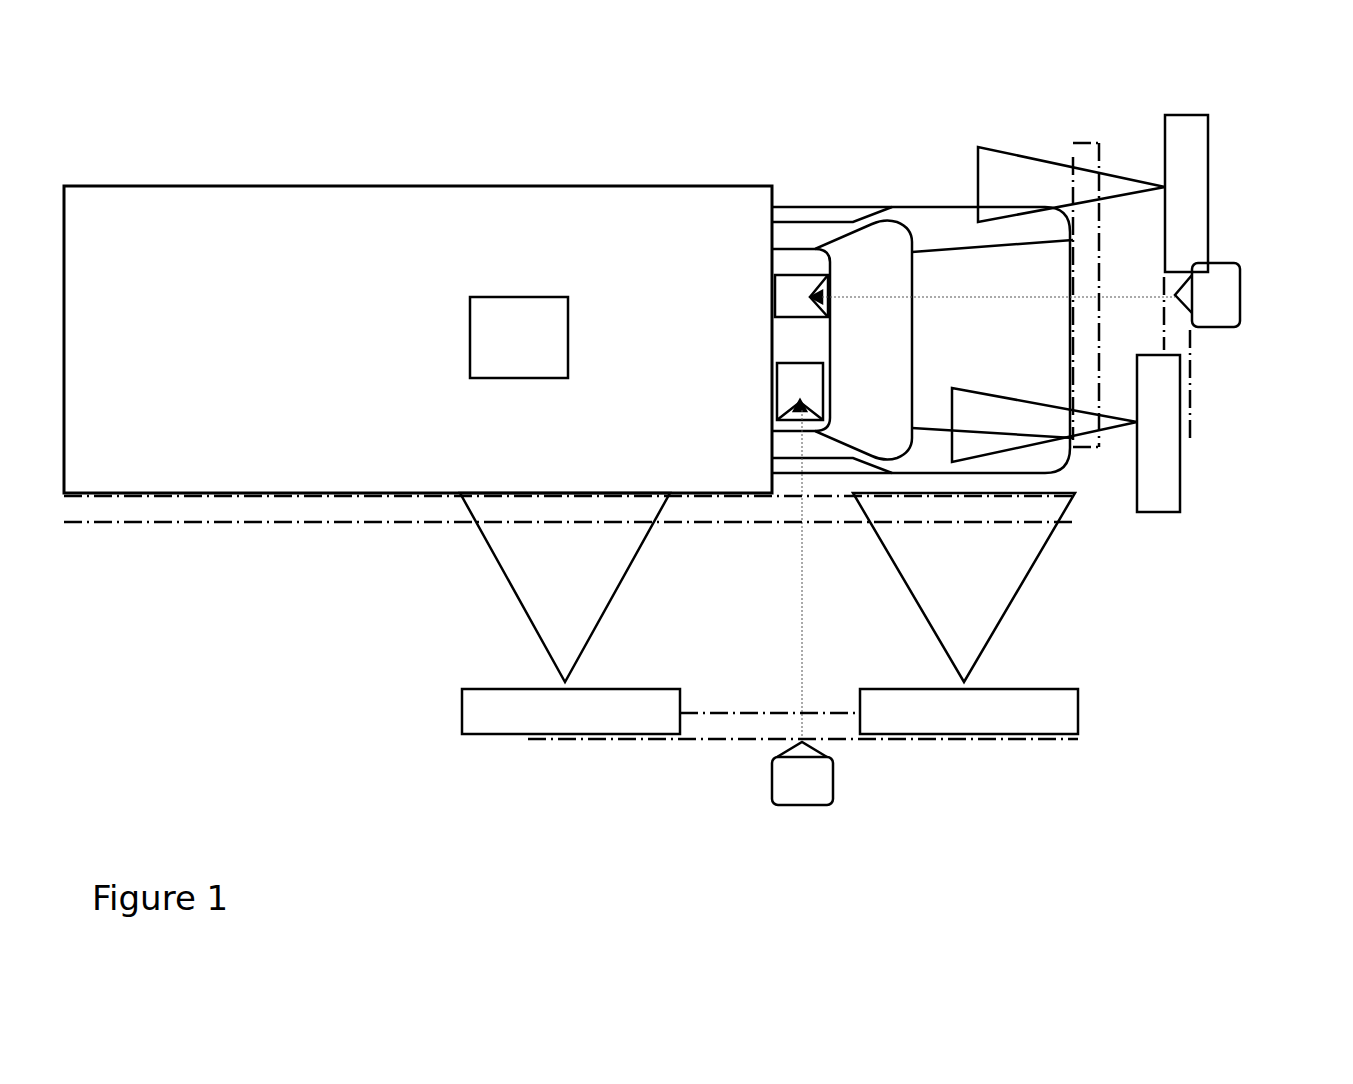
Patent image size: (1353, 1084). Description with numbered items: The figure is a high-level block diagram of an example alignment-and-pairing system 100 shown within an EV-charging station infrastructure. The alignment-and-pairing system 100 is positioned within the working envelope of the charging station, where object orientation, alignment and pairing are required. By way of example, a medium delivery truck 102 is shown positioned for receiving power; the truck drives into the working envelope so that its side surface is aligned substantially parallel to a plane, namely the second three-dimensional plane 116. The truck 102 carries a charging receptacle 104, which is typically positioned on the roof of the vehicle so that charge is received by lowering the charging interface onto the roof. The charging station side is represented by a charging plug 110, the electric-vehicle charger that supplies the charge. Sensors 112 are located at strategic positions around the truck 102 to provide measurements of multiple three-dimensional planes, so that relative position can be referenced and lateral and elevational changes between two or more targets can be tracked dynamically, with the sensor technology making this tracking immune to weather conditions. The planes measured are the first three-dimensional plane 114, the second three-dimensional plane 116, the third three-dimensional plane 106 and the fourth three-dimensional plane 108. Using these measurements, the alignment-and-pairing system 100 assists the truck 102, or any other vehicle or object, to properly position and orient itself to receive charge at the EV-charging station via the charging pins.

The alignment-and-pairing system 100 is at (703, 503).
The medium delivery truck 102 is at (229, 186).
The charging receptacle 104 is at (772, 276).
The 3D Plane 3 106 is at (1072, 142).
The 3D Plane 4 108 is at (1192, 388).
The charging plug 110 is at (1240, 264).
The sensors 112 is at (1206, 200).
The 3D Plane 1 114 is at (803, 712).
The 3D Plane 2 116 is at (737, 523).